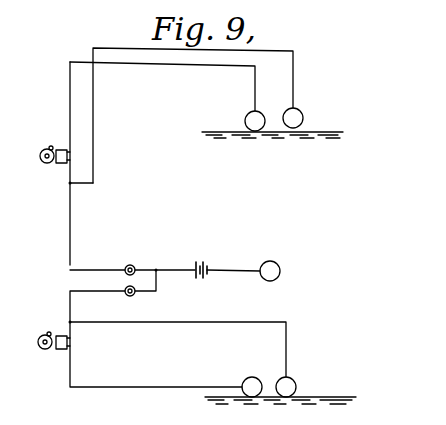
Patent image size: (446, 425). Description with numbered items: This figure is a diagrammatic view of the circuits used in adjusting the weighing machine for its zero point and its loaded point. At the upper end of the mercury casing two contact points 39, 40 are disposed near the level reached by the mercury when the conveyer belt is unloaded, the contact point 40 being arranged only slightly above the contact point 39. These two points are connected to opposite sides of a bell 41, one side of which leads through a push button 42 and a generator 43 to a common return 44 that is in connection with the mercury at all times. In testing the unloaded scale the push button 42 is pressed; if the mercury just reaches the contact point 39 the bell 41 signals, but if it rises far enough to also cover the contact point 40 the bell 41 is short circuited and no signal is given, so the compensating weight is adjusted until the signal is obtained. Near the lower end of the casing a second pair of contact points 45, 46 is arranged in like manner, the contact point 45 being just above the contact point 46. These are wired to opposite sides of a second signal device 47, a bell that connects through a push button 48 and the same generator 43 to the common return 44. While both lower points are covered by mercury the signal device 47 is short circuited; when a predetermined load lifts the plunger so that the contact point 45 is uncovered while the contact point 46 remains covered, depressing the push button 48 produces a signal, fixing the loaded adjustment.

The contact point 39 is at (255, 131).
The contact point 40 is at (303, 117).
The bell 41 is at (50, 165).
The push button 42 is at (131, 264).
The generator 43 is at (209, 258).
The common return 44 is at (280, 272).
The contact point 45 is at (293, 380).
The contact point 46 is at (252, 377).
The signal device 47 is at (50, 352).
The push button 48 is at (135, 295).